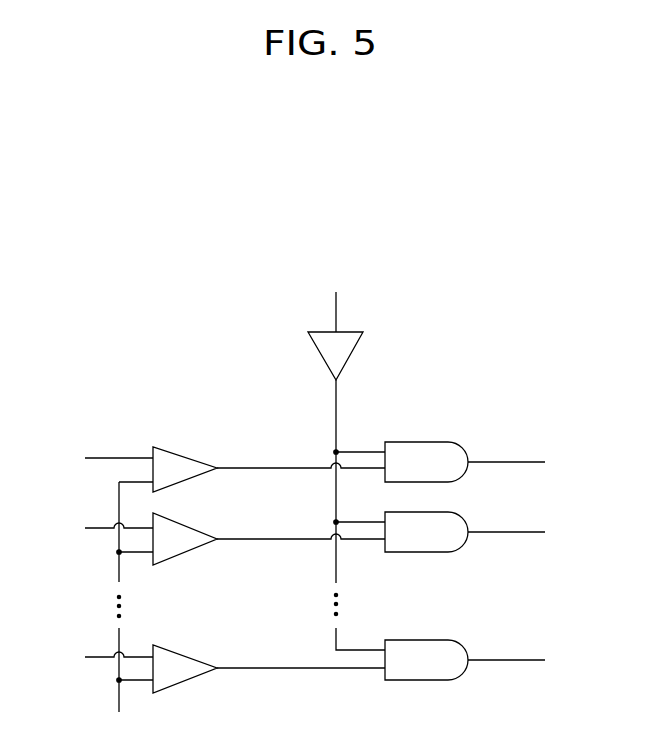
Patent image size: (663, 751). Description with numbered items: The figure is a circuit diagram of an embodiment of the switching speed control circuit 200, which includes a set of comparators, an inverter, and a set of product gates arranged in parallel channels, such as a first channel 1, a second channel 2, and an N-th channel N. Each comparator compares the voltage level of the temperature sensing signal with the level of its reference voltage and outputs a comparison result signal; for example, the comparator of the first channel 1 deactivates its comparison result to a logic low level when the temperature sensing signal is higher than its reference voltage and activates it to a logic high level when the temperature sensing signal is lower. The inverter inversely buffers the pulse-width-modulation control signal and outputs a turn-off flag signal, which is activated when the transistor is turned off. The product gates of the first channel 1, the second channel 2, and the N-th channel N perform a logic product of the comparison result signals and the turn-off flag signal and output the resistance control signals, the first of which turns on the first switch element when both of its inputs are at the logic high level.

The switching speed control circuit 200 is at (521, 301).
The first comparison channel (OP 1 , AND 1 ) 1 is at (321, 461).
The second comparison channel (OP 2 , AND 2 ) 2 is at (321, 532).
The N-th comparison channel (OP N , AND N ) N is at (321, 661).